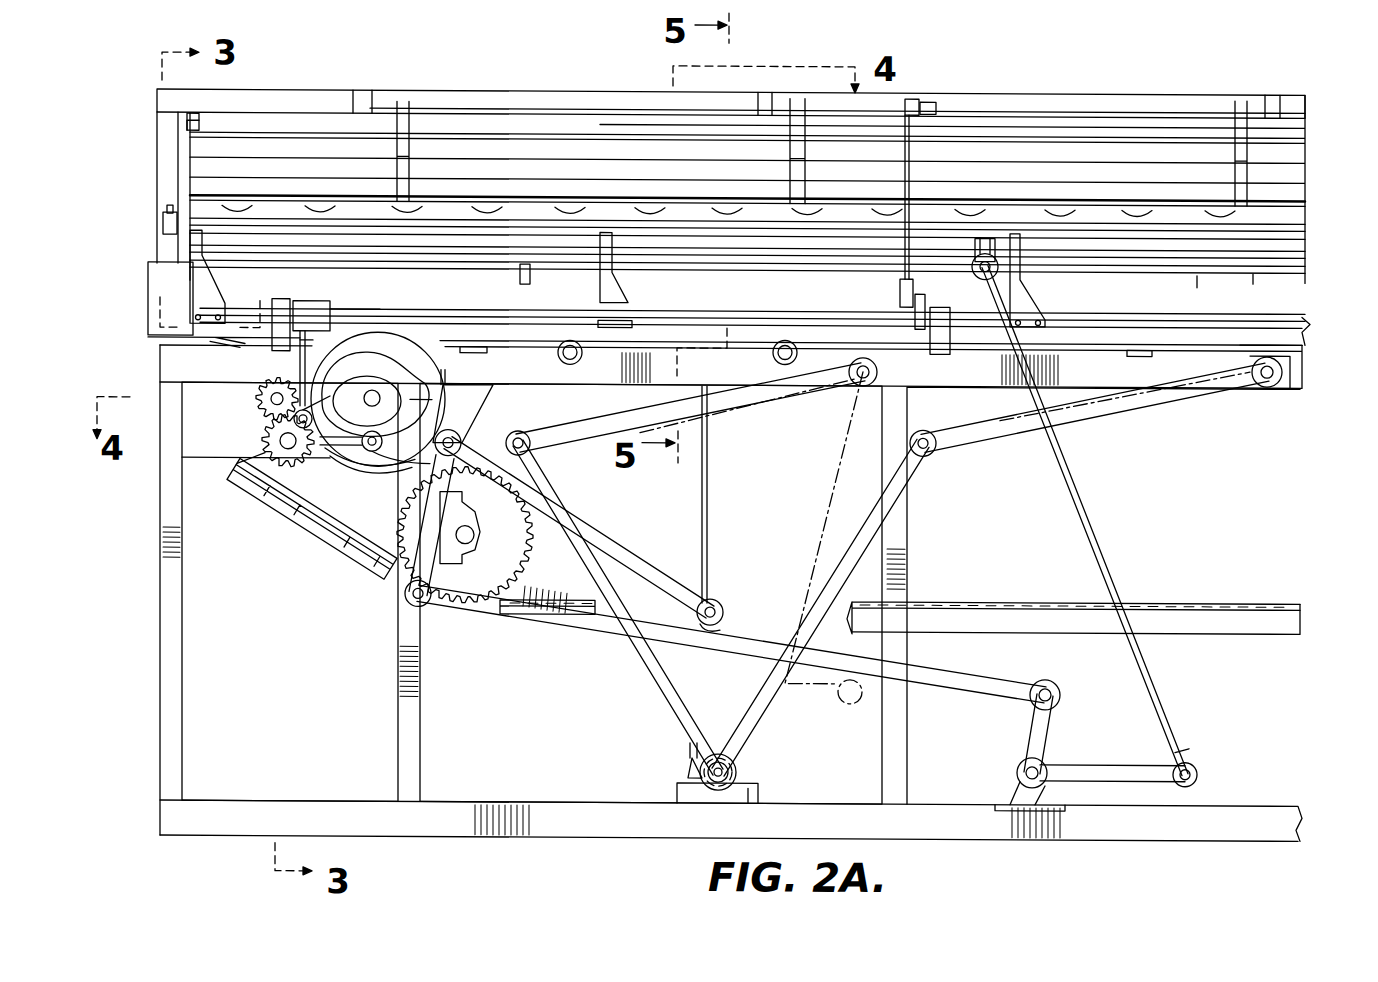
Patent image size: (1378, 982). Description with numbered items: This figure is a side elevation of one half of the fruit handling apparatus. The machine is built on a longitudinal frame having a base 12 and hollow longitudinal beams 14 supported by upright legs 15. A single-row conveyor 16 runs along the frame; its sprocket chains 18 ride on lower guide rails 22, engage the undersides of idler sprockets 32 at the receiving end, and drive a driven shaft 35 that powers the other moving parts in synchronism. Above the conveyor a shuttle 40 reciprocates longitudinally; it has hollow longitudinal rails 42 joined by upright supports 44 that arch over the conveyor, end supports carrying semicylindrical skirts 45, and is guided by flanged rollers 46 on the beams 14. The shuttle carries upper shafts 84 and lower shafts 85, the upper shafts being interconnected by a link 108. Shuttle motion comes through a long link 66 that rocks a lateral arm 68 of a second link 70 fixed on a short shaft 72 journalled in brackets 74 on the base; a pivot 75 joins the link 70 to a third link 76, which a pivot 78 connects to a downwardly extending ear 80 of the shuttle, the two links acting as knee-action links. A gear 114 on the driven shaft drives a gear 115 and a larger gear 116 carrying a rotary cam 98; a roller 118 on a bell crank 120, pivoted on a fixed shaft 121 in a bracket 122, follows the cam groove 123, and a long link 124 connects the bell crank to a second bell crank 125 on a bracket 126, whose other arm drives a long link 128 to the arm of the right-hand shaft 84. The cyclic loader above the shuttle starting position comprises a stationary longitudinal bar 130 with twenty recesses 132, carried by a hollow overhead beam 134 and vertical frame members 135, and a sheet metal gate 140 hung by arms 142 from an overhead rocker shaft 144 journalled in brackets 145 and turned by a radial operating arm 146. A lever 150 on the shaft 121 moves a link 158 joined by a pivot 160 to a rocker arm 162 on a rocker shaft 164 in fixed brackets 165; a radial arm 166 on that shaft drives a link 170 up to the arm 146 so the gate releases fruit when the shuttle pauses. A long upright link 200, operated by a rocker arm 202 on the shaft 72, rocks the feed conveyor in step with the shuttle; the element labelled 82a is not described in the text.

The base 12 is at (977, 272).
The hollow longitudinal beams 14 is at (1300, 380).
The legs 15 is at (182, 662).
The single-row conveyor 16 is at (292, 540).
The sprocket chains 18 is at (1185, 598).
The lower guide rails 22 is at (1260, 620).
The idler sprockets 32 is at (472, 555).
The driven shaft 35 is at (294, 416).
The shuttle 40 is at (1328, 334).
The hollow longitudinal rails 42 is at (1295, 326).
The upright supports 44 is at (190, 290).
The semicylindrical skirts 45 is at (150, 273).
The flanged rollers 46 is at (775, 356).
The long link 66 is at (622, 553).
The lateral arm 68 is at (668, 658).
The second link 70 is at (668, 710).
The short shaft 72 is at (738, 765).
The brackets 74 is at (755, 790).
The pivot 75 is at (530, 447).
The third link 76 is at (605, 432).
The pivot 78 is at (858, 380).
The downwardly extending ear 80 is at (858, 384).
The lower rail bar 82a is at (455, 282).
The upper shafts 84 is at (1197, 270).
The lower shafts 85 is at (1253, 268).
The rotary cam 98 is at (392, 472).
The link 108 is at (163, 222).
The gear 114 is at (258, 398).
The gear 115 is at (272, 462).
The larger gear 116 is at (365, 450).
The roller 118 is at (378, 462).
The bell crank 120 is at (460, 498).
The fixed shaft 121 is at (461, 441).
The bracket 122 is at (488, 400).
The cam groove 123 is at (405, 385).
The long link 124 is at (472, 605).
The second bell crank 125 is at (1080, 776).
The bracket 126 is at (1015, 790).
The long link 128 is at (1082, 515).
The stationary longitudinal bar 130 is at (1275, 250).
The recesses 132 is at (235, 205).
The hollow overhead beam 134 is at (268, 88).
The vertical frame members 135 is at (178, 155).
The sheet metal gate 140 is at (1292, 152).
The arms 142 is at (403, 100).
The overhead rocker shaft 144 is at (520, 100).
The brackets 145 is at (362, 88).
The radial operating arm 146 is at (922, 96).
The lever 150 is at (262, 440).
The link 158 is at (280, 355).
The pivot 160 is at (310, 300).
The rocker arm 162 is at (330, 305).
The rocker shaft 164 is at (530, 282).
The fixed brackets 165 is at (272, 305).
The radial arm 166 is at (920, 326).
The link 170 is at (911, 175).
The long upright link 200 is at (708, 545).
The rocker arm 202 is at (688, 768).